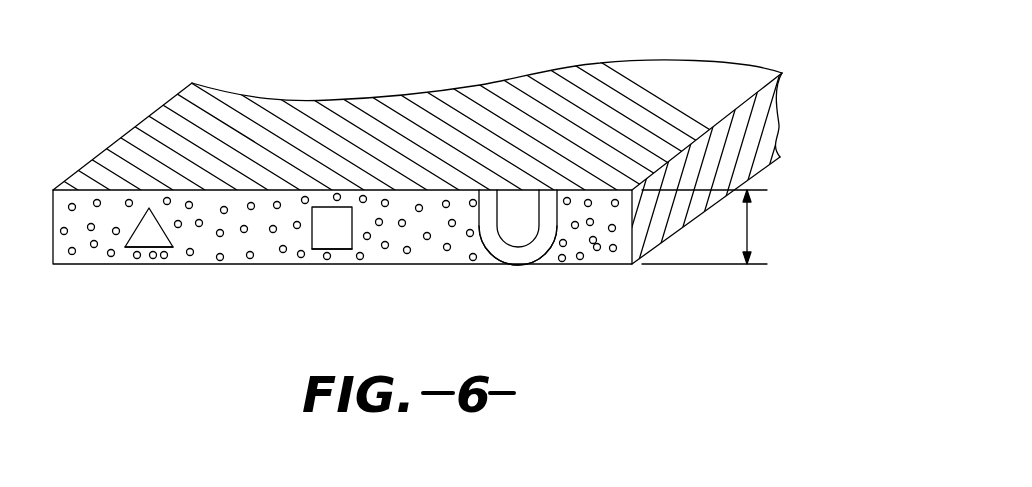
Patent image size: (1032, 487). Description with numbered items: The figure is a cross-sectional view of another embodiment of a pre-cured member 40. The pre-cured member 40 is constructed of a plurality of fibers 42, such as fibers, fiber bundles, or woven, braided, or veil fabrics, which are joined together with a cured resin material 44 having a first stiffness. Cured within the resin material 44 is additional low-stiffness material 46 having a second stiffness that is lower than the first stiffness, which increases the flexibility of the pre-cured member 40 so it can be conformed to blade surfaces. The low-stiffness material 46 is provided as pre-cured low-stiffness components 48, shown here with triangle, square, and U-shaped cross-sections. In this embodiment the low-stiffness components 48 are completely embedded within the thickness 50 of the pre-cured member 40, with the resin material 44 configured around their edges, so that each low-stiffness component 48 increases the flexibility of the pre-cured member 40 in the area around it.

The pre-cured member 40 is at (426, 178).
The fibers 42 is at (447, 251).
The resin material 44 is at (240, 249).
The additional low-stiffness material 46 is at (155, 248).
The low-stiffness component 48 is at (126, 248).
The thickness 50 is at (748, 228).